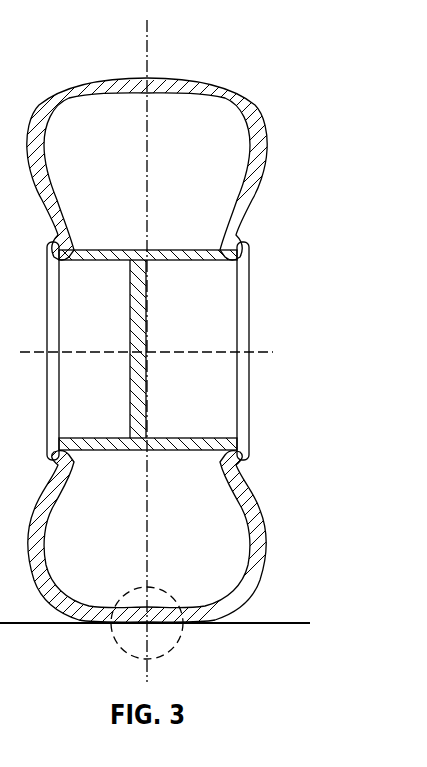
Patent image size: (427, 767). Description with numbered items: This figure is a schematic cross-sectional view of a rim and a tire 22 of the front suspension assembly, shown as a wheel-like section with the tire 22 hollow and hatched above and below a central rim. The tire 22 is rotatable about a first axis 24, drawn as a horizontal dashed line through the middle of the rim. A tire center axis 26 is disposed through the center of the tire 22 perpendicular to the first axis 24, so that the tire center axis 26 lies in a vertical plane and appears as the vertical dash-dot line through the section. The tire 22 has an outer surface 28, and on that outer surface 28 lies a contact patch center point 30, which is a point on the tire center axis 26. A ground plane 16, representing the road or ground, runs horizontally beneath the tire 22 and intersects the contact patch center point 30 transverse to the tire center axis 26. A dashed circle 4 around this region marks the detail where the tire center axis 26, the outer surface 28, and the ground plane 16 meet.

The detail region of contact patch 4 is at (165, 652).
The ground plane 16 is at (265, 623).
The tire 22 is at (258, 166).
The first axis 24 is at (253, 348).
The tire center axis 26 is at (152, 53).
The outer surface 28 is at (220, 622).
The contact patch center point 30 is at (128, 632).